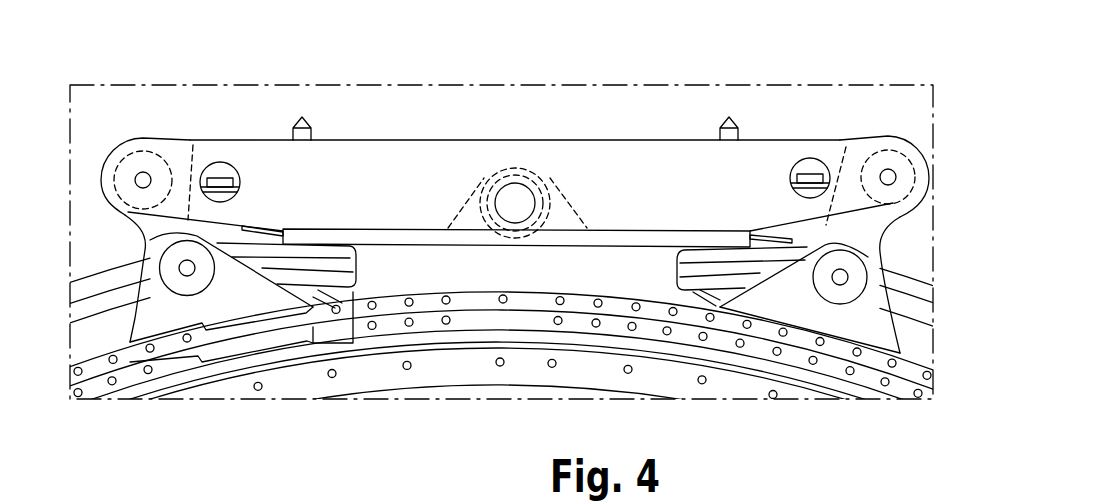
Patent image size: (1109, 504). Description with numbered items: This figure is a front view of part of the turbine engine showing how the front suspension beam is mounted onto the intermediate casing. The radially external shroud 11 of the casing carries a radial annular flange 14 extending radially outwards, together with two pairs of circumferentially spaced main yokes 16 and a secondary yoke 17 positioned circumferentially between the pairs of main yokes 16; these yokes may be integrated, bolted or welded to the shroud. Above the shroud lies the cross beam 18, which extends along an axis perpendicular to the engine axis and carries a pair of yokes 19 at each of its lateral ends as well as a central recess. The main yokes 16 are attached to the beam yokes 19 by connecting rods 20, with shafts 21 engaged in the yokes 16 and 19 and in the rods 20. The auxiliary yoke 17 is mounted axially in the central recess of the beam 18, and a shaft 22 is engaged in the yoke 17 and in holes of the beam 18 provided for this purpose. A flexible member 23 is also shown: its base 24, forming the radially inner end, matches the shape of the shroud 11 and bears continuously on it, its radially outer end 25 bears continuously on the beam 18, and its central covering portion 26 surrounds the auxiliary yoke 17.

The radially external shroud 11 is at (760, 370).
The radial annular flange 14 is at (870, 355).
The main yoke 16 is at (163, 307).
The secondary yoke 17 is at (567, 203).
The cross beam 18 is at (633, 167).
The yoke 19 is at (173, 160).
The connecting rod 20 is at (153, 225).
The shaft 21 is at (888, 177).
The shaft 22 is at (513, 203).
The member 23 is at (540, 263).
The base 24 is at (352, 292).
The radially outer end 25 is at (417, 235).
The covering portion 26 is at (742, 268).